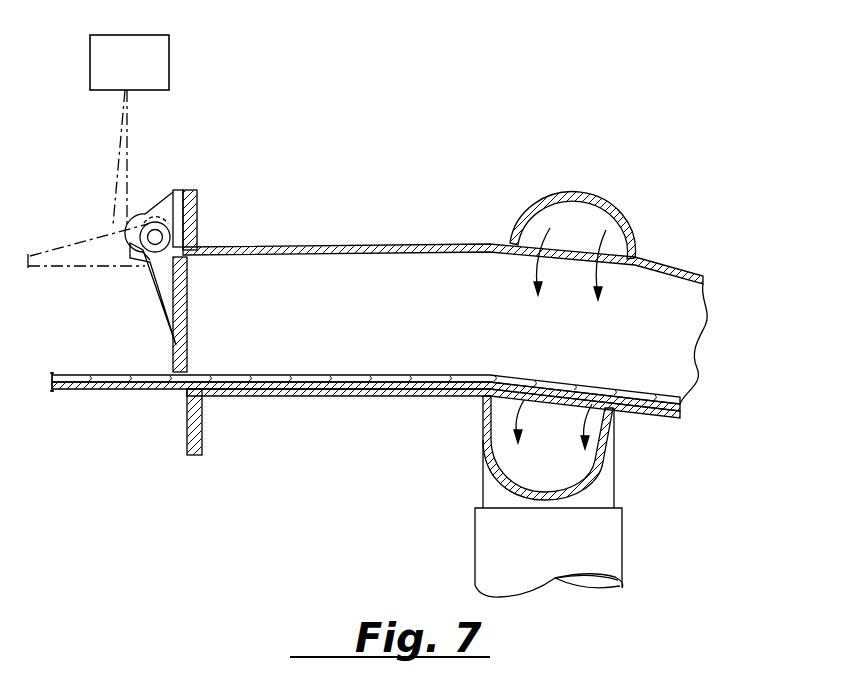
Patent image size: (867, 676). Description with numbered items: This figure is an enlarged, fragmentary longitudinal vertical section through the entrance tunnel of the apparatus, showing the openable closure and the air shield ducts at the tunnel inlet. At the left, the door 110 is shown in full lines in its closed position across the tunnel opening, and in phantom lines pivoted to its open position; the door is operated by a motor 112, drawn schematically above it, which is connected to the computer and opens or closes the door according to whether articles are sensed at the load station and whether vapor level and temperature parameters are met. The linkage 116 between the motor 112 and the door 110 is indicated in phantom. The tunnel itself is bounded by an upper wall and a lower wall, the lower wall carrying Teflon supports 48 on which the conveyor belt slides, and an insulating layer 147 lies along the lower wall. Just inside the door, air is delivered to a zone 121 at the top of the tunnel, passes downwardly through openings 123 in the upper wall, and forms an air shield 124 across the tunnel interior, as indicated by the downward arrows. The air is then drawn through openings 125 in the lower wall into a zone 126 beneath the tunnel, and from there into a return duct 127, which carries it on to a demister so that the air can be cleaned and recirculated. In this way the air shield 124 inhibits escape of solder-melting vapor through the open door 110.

The motor 112 is at (160, 68).
The linkage 116 is at (128, 158).
The door 110 is at (177, 307).
The openings in the upper wall of the tunnel 123 is at (633, 240).
The zone at the top of the tunnel 121 is at (585, 220).
The air shield 124 is at (590, 337).
The insulation belt 147 is at (362, 378).
The Teflon supports 48 is at (332, 396).
The zone 126 is at (535, 462).
The openings in the lower wall of the tunnel 125 is at (608, 418).
The return duct 127 is at (622, 540).